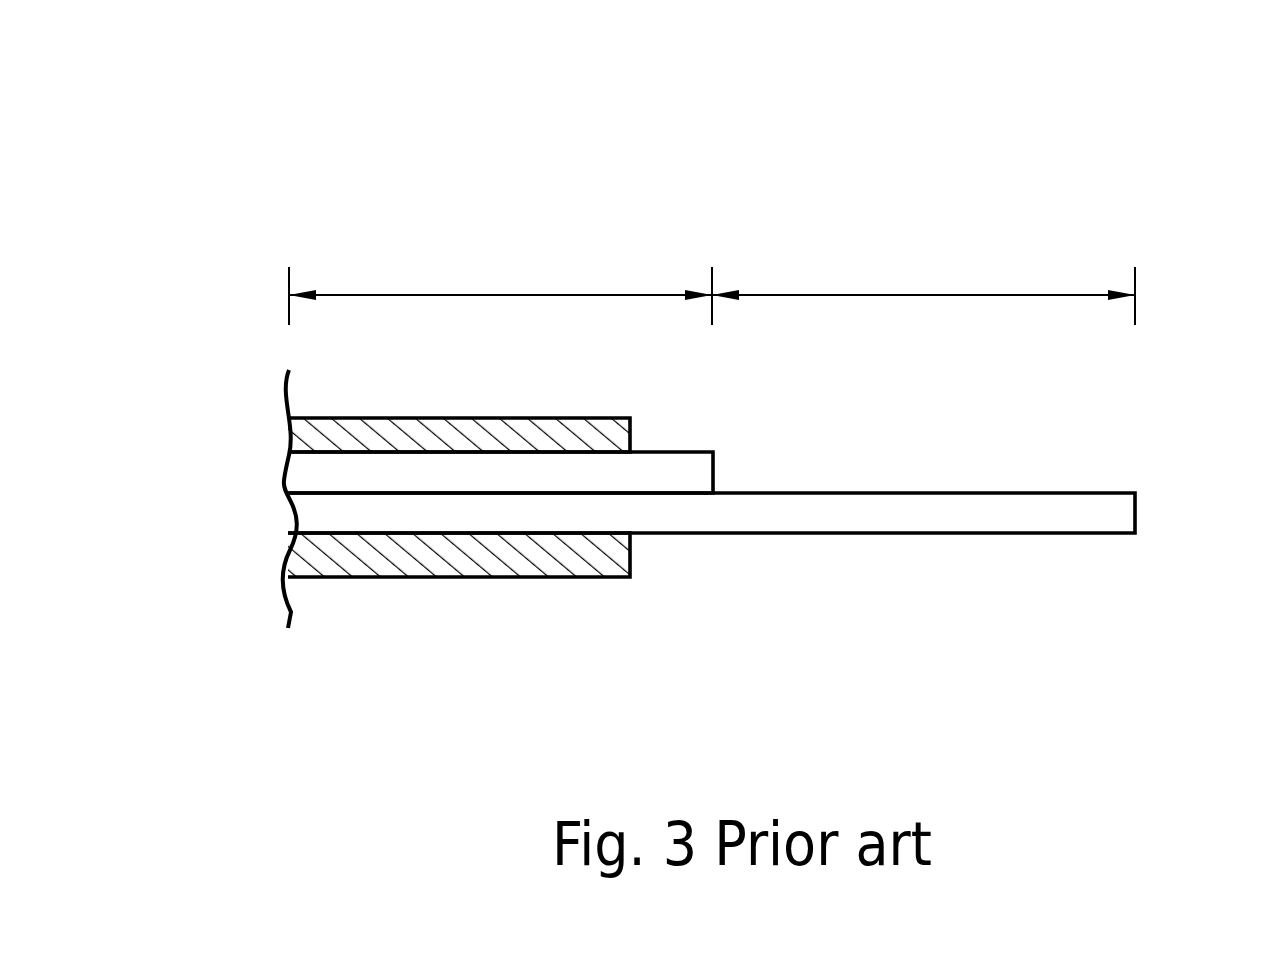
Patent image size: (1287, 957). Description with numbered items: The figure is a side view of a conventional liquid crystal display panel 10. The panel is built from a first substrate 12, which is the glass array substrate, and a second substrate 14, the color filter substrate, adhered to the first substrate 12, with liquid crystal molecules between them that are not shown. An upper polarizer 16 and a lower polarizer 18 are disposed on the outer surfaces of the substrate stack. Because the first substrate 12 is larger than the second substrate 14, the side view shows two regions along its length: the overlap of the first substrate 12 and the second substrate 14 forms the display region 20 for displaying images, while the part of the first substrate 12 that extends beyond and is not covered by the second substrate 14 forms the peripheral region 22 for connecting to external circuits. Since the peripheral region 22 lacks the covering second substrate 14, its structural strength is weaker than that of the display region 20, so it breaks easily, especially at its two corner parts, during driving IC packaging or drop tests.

The conventional liquid crystal display panel 10 is at (1067, 127).
The first substrate 12 is at (315, 517).
The second substrate 14 is at (302, 470).
The upper polarizer 16 is at (403, 428).
The lower polarizer 18 is at (522, 566).
The display region 20 is at (500, 289).
The peripheral region 22 is at (923, 289).